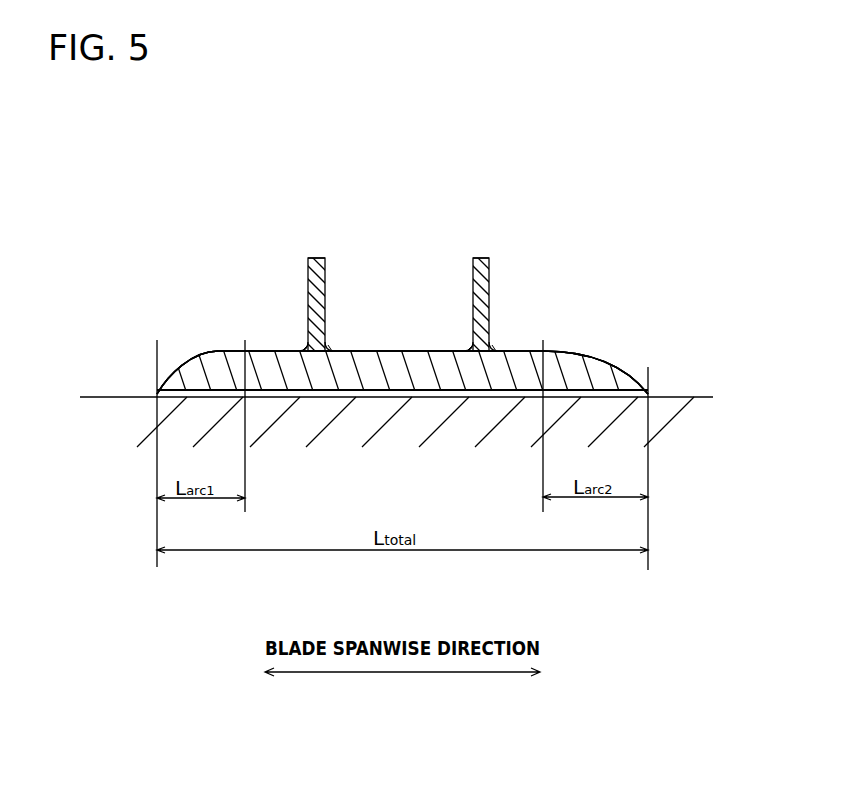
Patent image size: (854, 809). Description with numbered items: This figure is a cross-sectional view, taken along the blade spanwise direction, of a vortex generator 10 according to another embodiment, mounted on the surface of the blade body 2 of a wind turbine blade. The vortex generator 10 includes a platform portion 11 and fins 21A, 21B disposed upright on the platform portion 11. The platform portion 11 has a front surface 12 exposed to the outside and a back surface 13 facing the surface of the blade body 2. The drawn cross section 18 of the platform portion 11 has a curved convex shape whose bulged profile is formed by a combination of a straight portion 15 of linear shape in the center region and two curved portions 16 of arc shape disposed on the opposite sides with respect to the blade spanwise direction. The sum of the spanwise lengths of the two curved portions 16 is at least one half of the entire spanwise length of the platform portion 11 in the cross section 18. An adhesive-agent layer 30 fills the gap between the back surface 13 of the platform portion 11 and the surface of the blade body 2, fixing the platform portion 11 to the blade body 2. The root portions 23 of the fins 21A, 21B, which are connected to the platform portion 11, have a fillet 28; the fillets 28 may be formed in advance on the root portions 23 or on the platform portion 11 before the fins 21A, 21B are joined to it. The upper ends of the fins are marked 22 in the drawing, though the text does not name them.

The blade body 2 is at (690, 397).
The vortex generator 10 is at (162, 227).
The platform portion 11 is at (622, 368).
The front surface 12 is at (525, 351).
The back surface 13 is at (456, 399).
The straight portion 15 is at (400, 350).
The curved portion 16 is at (208, 352).
The cross section 18 is at (180, 350).
The fin 21A is at (308, 270).
The fin 21B is at (473, 270).
The protrusion tip 22 is at (320, 259).
The root portion 23 is at (340, 350).
The fillet 28 is at (304, 349).
The adhesive-agent layer 30 is at (307, 399).